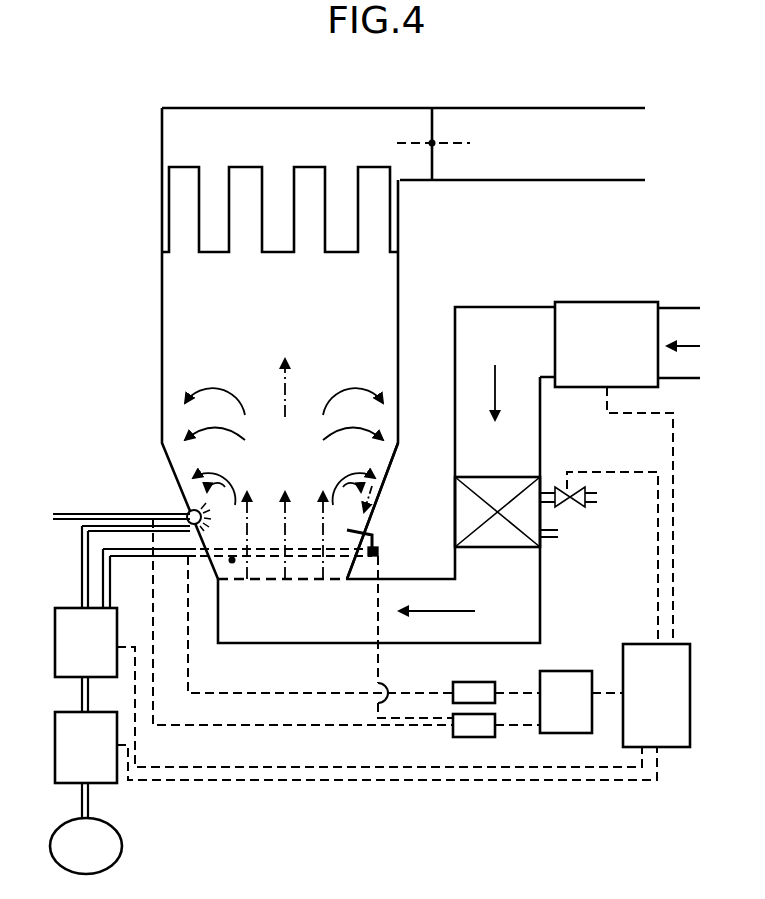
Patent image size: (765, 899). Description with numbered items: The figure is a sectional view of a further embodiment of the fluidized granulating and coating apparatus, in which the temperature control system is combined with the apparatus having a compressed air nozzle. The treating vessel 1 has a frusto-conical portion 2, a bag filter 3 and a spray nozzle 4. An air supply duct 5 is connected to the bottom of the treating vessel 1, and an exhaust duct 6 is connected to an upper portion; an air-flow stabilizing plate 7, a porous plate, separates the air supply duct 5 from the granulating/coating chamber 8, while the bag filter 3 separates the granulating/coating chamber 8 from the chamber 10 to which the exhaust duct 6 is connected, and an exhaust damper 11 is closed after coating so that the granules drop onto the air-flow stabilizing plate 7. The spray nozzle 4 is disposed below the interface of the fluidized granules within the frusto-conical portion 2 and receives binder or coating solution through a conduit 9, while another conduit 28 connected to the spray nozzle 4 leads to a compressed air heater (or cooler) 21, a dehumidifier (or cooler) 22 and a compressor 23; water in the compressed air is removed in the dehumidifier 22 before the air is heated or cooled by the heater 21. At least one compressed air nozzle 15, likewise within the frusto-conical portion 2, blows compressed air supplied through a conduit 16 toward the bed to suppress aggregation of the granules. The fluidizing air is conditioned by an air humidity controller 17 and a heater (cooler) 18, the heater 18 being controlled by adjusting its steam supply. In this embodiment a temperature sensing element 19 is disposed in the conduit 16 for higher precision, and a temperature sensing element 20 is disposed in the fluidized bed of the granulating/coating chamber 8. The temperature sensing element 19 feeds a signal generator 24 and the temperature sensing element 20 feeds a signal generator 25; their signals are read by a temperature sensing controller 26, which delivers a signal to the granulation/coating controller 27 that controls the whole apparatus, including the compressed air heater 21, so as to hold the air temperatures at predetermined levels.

The treating vessel 1 is at (152, 313).
The frusto-conical portion 2 is at (381, 500).
The bag filter 3 is at (398, 225).
The spray nozzle 4 is at (186, 512).
The air supply duct 5 is at (423, 646).
The exhaust duct 6 is at (513, 109).
The air-flow stabilizing plate 7 is at (323, 581).
The granulating/coating chamber 8 is at (322, 369).
The conduit 9 is at (104, 514).
The chamber 10 is at (286, 108).
The exhaust damper 11 is at (434, 119).
The compressed air nozzle 15 is at (371, 535).
The conduit 16 is at (130, 558).
The air humidity controller 17 is at (645, 305).
The heater (cooler) 18 is at (538, 487).
The temperature sensing element 19 is at (379, 553).
The temperature sensing element 20 is at (232, 563).
The compressed air heater (cooler) 21 is at (70, 609).
The dehumidifier (cooler) 22 is at (115, 785).
The compressor 23 is at (110, 855).
The signal generator 24 is at (464, 737).
The signal generator 25 is at (472, 684).
The temperature sensing controller 26 is at (548, 733).
The granulation/coating controller 27 is at (632, 654).
The conduit 28 is at (79, 527).